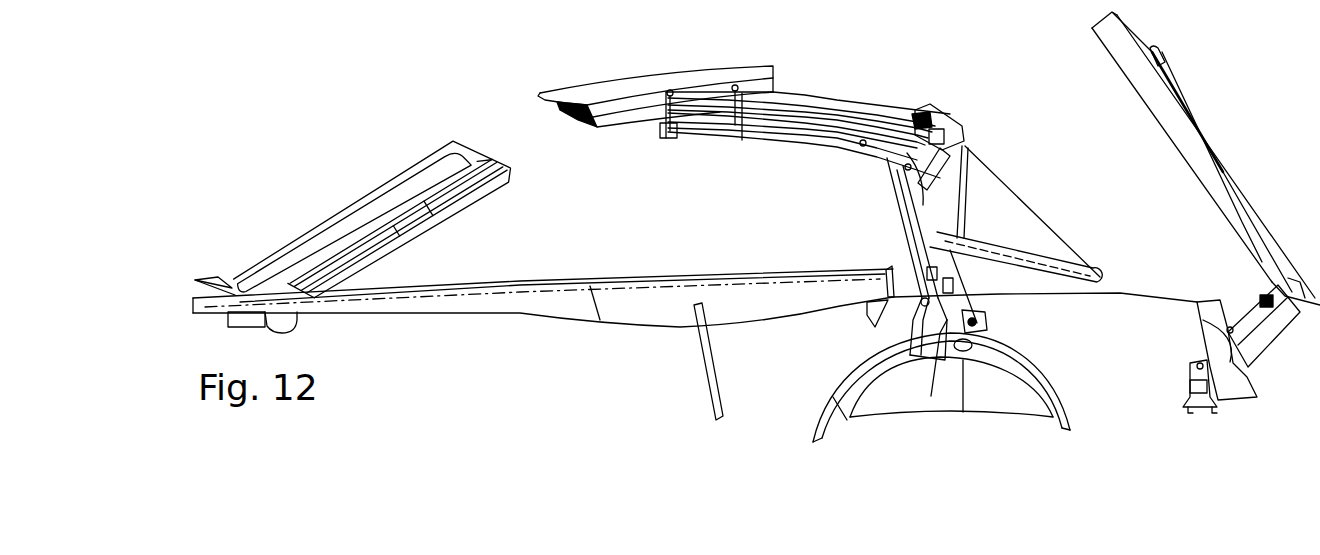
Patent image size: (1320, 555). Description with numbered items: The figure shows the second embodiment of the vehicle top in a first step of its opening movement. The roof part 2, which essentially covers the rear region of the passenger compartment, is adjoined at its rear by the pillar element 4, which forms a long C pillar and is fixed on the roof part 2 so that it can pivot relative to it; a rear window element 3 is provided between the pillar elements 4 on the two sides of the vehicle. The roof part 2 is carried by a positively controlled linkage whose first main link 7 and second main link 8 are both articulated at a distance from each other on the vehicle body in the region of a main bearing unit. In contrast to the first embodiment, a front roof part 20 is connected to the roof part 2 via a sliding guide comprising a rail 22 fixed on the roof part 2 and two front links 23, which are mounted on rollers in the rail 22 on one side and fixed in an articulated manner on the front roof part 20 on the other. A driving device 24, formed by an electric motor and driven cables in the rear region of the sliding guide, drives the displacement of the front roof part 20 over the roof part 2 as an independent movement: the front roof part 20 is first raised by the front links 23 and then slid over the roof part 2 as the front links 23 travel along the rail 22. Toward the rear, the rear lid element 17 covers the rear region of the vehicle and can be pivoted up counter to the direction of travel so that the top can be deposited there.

The roof part 2 is at (833, 98).
The rear window element 3 is at (940, 373).
The pillar element 4 is at (1007, 220).
The first main link 7 is at (898, 192).
The second main link 8 is at (948, 225).
The rear lid element 17 is at (1153, 92).
The front roof part 20 is at (573, 88).
The rail 22 is at (708, 133).
The front links 23 is at (734, 94).
The driving device 24 is at (927, 113).